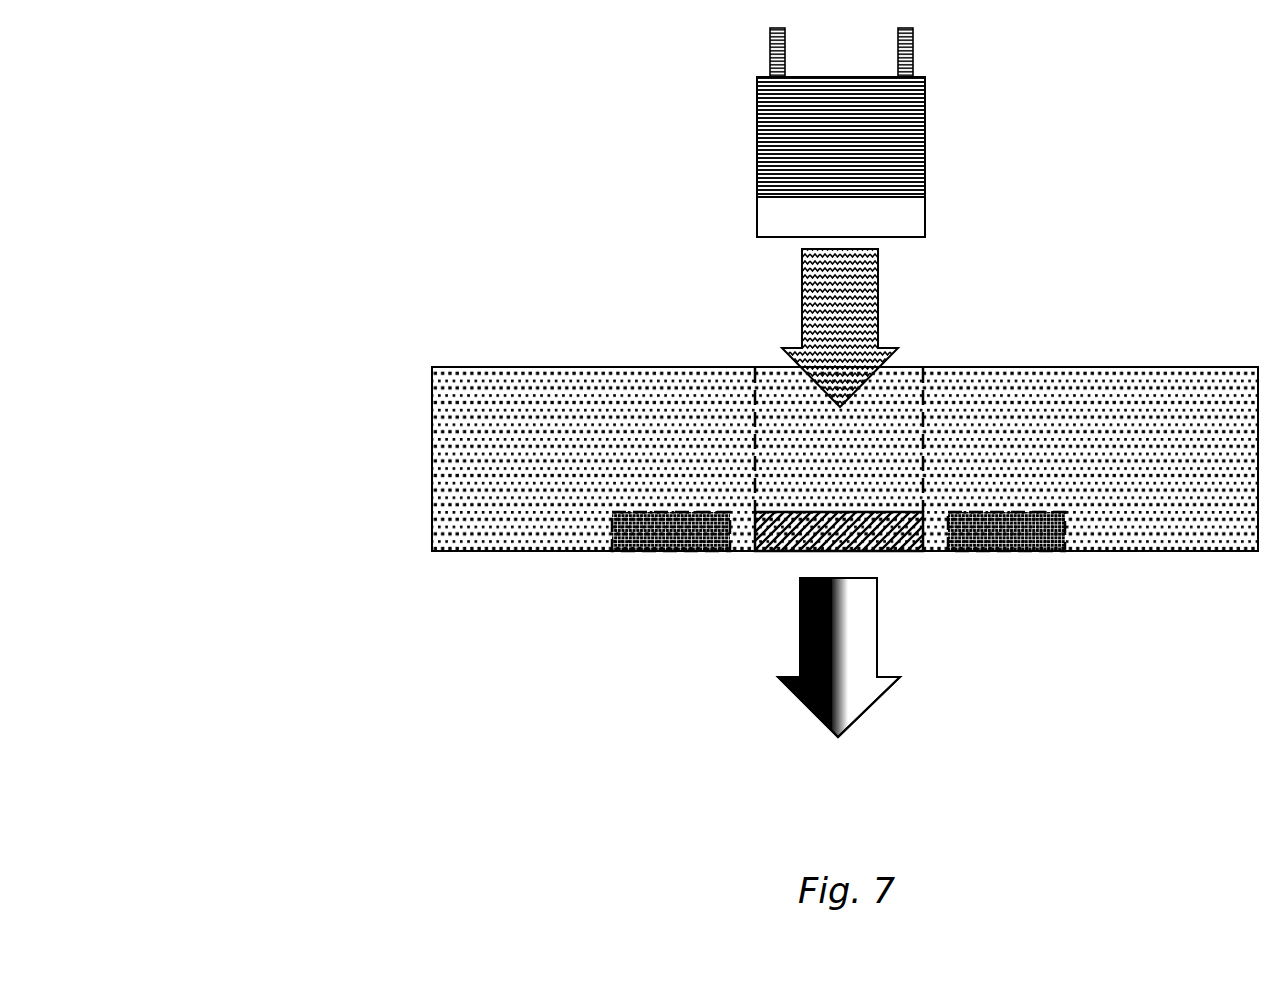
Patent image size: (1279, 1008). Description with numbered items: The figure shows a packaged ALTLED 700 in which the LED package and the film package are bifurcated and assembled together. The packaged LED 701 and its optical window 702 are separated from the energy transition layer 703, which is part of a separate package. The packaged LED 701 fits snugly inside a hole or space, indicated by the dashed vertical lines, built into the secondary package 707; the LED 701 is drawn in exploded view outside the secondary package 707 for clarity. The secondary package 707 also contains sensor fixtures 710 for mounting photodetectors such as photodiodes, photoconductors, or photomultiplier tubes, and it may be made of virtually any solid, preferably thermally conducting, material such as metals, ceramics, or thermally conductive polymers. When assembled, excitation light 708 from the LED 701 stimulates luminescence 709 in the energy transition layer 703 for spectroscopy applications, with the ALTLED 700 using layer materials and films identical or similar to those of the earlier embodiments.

The ALTLED 700 is at (697, 433).
The packaged LED 701 is at (757, 135).
The optical window 702 is at (757, 218).
The energy transition layer 703 is at (777, 555).
The secondary package 707 is at (668, 402).
The excitation light 708 is at (900, 348).
The luminescence 709 is at (897, 680).
The sensor fixtures 710 is at (668, 555).